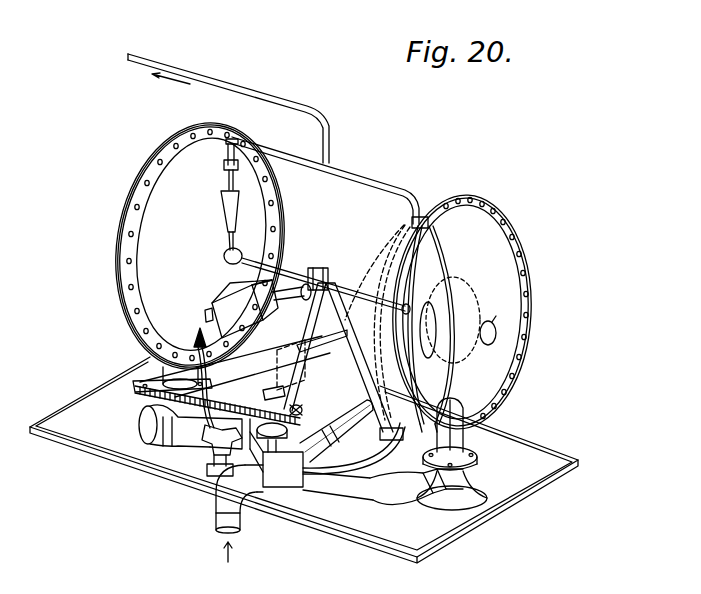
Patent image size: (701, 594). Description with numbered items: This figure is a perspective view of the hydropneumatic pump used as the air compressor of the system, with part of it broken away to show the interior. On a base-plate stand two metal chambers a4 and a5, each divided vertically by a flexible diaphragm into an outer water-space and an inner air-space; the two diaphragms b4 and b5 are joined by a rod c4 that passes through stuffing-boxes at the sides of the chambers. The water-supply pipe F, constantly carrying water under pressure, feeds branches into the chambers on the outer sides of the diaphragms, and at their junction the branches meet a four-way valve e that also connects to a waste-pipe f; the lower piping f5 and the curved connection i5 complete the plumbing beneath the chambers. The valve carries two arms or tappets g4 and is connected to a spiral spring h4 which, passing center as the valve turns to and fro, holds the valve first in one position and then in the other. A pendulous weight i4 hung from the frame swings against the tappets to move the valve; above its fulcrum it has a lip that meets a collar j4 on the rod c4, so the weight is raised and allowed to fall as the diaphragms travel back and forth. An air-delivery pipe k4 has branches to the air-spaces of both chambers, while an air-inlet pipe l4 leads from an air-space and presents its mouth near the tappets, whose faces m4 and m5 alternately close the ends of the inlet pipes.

The air-delivery pipe k4 is at (250, 83).
The metal chamber a4 is at (200, 246).
The diaphragm b4 is at (116, 304).
The rod c4 is at (326, 280).
The collar j4 is at (326, 266).
The metal chamber a5 is at (462, 312).
The diaphragm b5 is at (431, 329).
The pendulous weight i4 is at (258, 309).
The air-inlet pipe l4 is at (280, 357).
The spiral spring h4 is at (217, 401).
The face m4 is at (264, 396).
The arms or tappets g4 is at (238, 388).
The face m5 is at (300, 410).
The four-way valve e is at (280, 455).
The waste-pipe f is at (362, 412).
The lower pipe f5 is at (370, 483).
The curved pipe i5 is at (382, 470).
The water-supply pipe F is at (216, 522).